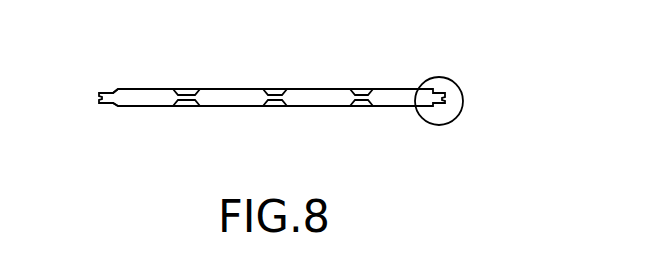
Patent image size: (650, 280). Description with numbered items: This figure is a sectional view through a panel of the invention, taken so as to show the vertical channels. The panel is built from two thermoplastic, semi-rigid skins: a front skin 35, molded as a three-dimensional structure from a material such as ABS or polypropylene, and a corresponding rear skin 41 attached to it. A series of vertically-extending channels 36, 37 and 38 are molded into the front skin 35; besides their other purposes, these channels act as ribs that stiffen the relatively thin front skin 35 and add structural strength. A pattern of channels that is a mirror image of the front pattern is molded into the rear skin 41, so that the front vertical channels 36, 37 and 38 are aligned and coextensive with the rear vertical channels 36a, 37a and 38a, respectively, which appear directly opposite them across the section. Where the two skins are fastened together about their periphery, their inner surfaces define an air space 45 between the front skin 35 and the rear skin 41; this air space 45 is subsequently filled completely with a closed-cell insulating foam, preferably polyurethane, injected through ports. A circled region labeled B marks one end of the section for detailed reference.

The front skin 35 is at (223, 107).
The vertically-extending channel 36 is at (188, 106).
The rear vertical channel 36a is at (187, 89).
The vertically-extending channel 37 is at (273, 106).
The rear vertical channel 37a is at (275, 89).
The vertically-extending channel 38 is at (362, 106).
The rear vertical channel 38a is at (363, 89).
The rear skin 41 is at (232, 89).
The air space 45 is at (142, 107).
The detail area B is at (458, 82).